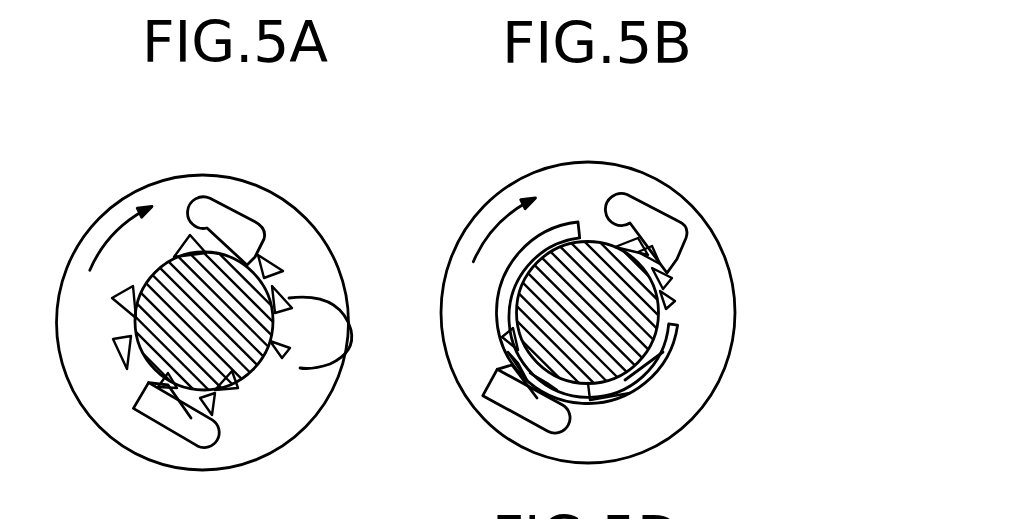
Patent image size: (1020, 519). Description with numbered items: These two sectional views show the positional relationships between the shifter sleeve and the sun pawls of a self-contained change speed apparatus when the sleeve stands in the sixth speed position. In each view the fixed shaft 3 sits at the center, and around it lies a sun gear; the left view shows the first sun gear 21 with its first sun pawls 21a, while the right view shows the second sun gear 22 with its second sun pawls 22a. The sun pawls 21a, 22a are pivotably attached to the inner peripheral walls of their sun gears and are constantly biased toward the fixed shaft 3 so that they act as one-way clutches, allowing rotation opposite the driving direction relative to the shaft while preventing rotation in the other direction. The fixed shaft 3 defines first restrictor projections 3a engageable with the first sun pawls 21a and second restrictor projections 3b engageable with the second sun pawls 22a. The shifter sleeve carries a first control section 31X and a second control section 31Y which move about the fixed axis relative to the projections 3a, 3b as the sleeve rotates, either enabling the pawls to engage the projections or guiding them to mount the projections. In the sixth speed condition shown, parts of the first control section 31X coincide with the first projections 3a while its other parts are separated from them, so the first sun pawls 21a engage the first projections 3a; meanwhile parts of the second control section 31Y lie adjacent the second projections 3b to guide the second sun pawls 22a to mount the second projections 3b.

In FIG. 5A, the first sun gear 21 is at (123, 443).
In FIG. 5A, the first sun pawls 21a is at (258, 226).
In FIG. 5B, the second sun gear 22 is at (509, 441).
In FIG. 5B, the second sun pawls 22a is at (677, 229).
In FIG. 5A, the fixed shaft 3 is at (238, 363).
In FIG. 5B, the fixed shaft 3 is at (619, 362).
In FIG. 5A, the first restrictor projections 3a is at (268, 269).
In FIG. 5B, the second restrictor projections 3b is at (668, 265).
In FIG. 5A, the first control section 31X is at (300, 368).
In FIG. 5B, the second control section 31Y is at (605, 222).